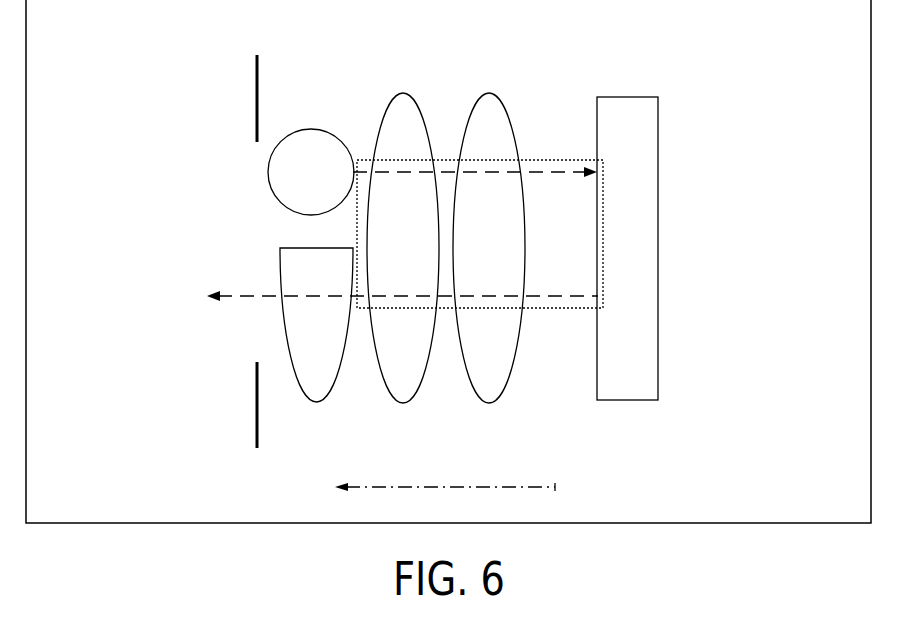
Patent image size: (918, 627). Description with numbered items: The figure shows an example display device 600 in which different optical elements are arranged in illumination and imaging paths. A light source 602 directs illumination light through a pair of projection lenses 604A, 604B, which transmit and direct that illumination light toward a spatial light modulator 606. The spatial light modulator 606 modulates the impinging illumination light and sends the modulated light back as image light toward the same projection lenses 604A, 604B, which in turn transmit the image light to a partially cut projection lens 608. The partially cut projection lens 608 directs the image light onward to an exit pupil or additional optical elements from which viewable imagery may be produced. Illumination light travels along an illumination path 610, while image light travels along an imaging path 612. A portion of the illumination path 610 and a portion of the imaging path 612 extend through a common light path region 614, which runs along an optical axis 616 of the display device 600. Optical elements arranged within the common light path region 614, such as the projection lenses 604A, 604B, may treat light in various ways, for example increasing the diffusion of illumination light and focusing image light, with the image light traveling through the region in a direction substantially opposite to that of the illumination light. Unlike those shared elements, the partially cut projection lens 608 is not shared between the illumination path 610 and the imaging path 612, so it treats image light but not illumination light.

The display device 600 is at (676, 141).
The light source 602 is at (294, 184).
The projection lens 604A is at (417, 103).
The projection lens 604B is at (503, 103).
The spatial light modulator 606 is at (613, 260).
The partially cut projection lens 608 is at (317, 402).
The illumination path 610 is at (570, 192).
The imaging path 612 is at (564, 312).
The common light path region 614 is at (535, 160).
The optical axis 616 is at (555, 485).